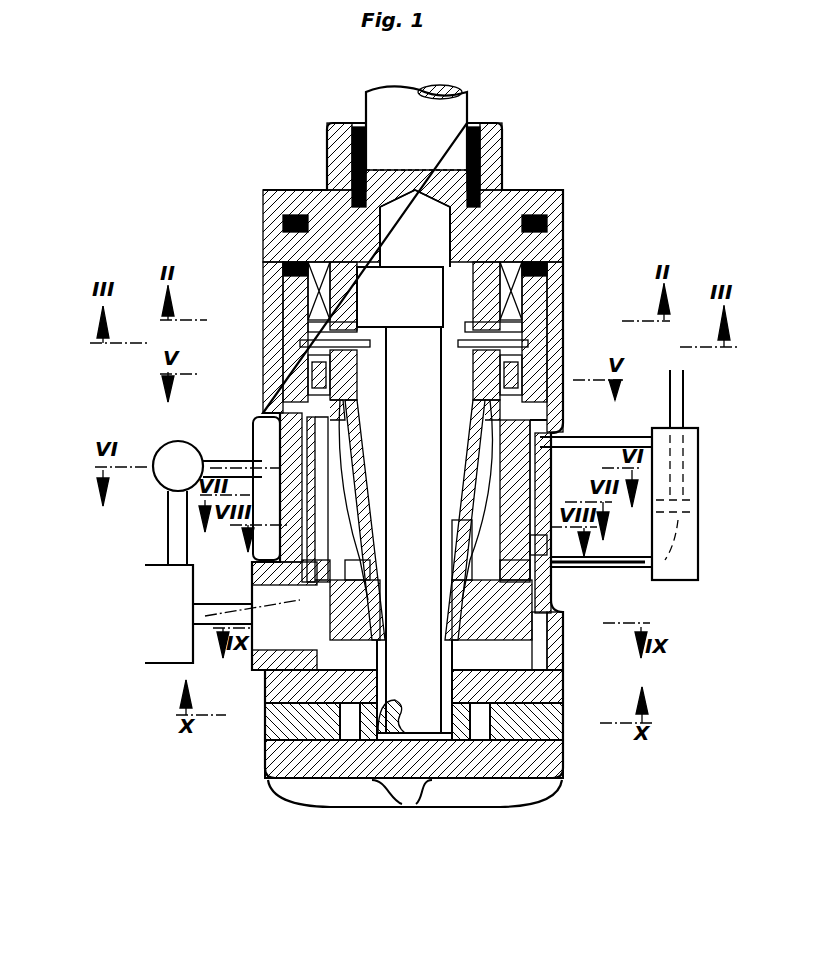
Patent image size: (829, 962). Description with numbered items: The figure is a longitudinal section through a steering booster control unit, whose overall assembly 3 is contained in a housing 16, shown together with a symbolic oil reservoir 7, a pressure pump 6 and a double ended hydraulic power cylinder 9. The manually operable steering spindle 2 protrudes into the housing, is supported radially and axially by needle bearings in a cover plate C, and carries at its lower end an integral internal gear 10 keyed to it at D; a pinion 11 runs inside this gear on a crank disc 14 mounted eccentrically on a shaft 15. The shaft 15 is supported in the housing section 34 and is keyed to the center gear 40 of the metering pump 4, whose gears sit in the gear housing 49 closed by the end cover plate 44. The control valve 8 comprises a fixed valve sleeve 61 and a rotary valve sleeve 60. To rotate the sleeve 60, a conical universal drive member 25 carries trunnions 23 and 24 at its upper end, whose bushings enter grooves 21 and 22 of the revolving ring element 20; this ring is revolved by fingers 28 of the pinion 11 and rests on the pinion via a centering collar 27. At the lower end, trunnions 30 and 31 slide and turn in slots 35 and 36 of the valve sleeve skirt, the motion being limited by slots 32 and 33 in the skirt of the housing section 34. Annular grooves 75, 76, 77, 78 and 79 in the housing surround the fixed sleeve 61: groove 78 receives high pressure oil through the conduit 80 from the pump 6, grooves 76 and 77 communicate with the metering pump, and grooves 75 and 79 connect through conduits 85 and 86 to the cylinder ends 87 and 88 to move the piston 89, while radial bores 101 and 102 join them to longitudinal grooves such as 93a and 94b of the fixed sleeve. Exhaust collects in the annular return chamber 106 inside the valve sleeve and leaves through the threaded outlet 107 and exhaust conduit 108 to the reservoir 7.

The steering spindle 2 is at (386, 108).
The overall assembly 3 is at (190, 223).
The metering pump 4 is at (188, 751).
The pressure pump 6 is at (162, 420).
The oil reservoir 7 is at (168, 640).
The control valve 8 is at (240, 445).
The double ended hydraulic power cylinder 9 is at (679, 608).
The internal gear 10 is at (283, 278).
The pinion 11 is at (285, 265).
The crank disc 14 is at (390, 286).
The shaft 15 is at (422, 614).
The housing 16 is at (312, 304).
The revolving ring element 20 is at (330, 330).
The groove 21 is at (306, 344).
The groove 22 is at (518, 330).
The trunnion 23 is at (318, 378).
The trunnion 24 is at (510, 362).
The rotative universal drive member 25 is at (358, 416).
The centering collar 27 is at (332, 268).
The fingers 28 is at (540, 300).
The trunnion 30 is at (348, 652).
The trunnion 31 is at (563, 717).
The slot 32 is at (357, 640).
The slot 33 is at (487, 650).
The housing section 34 is at (280, 686).
The slot 35 is at (330, 655).
The slot 36 is at (560, 630).
The center gear 40 is at (440, 655).
The end cover plate 44 is at (345, 762).
The gear housing 49 is at (280, 720).
The rotary valve sleeve 60 is at (556, 609).
The fixed valve sleeve 61 is at (517, 526).
The annular groove 75 is at (552, 578).
The annular groove 76 is at (540, 546).
The annular groove 77 is at (520, 496).
The annular groove 78 is at (556, 440).
The annular groove 79 is at (546, 430).
The high pressure conduit 80 is at (247, 468).
The conduit 85 is at (628, 565).
The conduit 86 is at (626, 437).
The cylinder end 87 is at (663, 558).
The cylinder end 88 is at (690, 474).
The piston 89 is at (690, 500).
The longitudinal groove 93a is at (366, 448).
The longitudinal groove 94b is at (510, 480).
The radial bores 101 is at (285, 556).
The radial bores 102 is at (510, 447).
The annular exhaust return chamber 106 is at (356, 576).
The threaded outlet 107 is at (268, 596).
The exhaust conduit 108 is at (205, 617).
The cover plate C is at (543, 192).
The key D is at (547, 318).